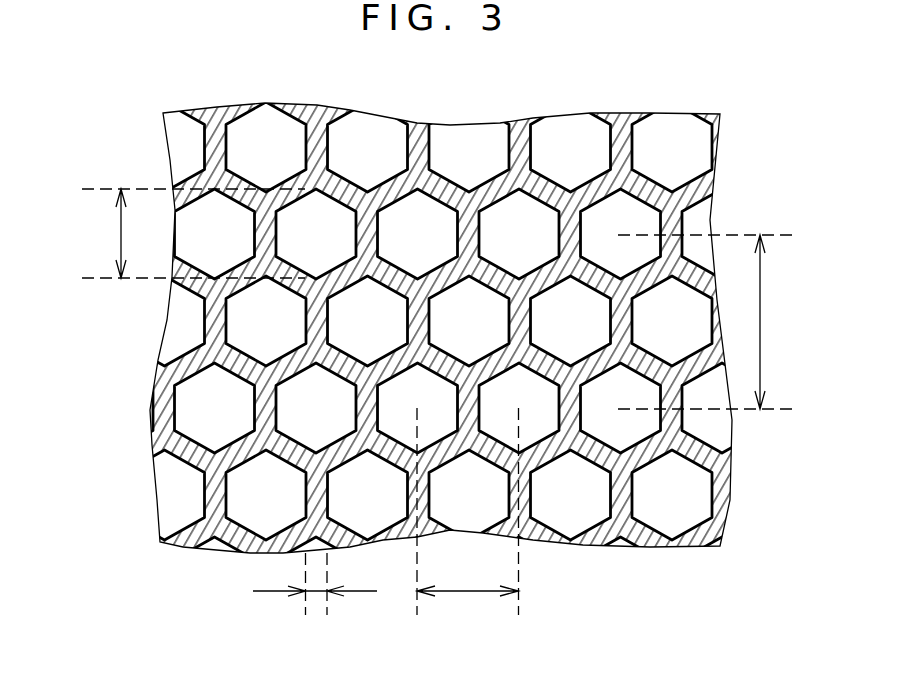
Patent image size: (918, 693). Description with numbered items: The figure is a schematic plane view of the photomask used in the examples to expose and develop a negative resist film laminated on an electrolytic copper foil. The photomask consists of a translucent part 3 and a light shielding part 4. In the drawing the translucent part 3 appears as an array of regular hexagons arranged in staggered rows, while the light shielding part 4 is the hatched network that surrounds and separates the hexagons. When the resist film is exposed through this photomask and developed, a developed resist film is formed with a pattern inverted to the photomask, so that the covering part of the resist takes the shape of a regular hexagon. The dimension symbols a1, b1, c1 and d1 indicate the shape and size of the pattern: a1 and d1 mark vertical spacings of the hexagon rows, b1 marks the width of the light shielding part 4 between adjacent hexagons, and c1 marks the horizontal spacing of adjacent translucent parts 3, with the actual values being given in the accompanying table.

The translucent part 3 is at (252, 510).
The light shielding part 4 is at (172, 443).
The recess pitch in vertical direction a1 is at (187, 233).
The partition wall width b1 is at (315, 601).
The recess pitch in horizontal direction c1 is at (468, 519).
The recess pitch across two rows d1 is at (715, 322).